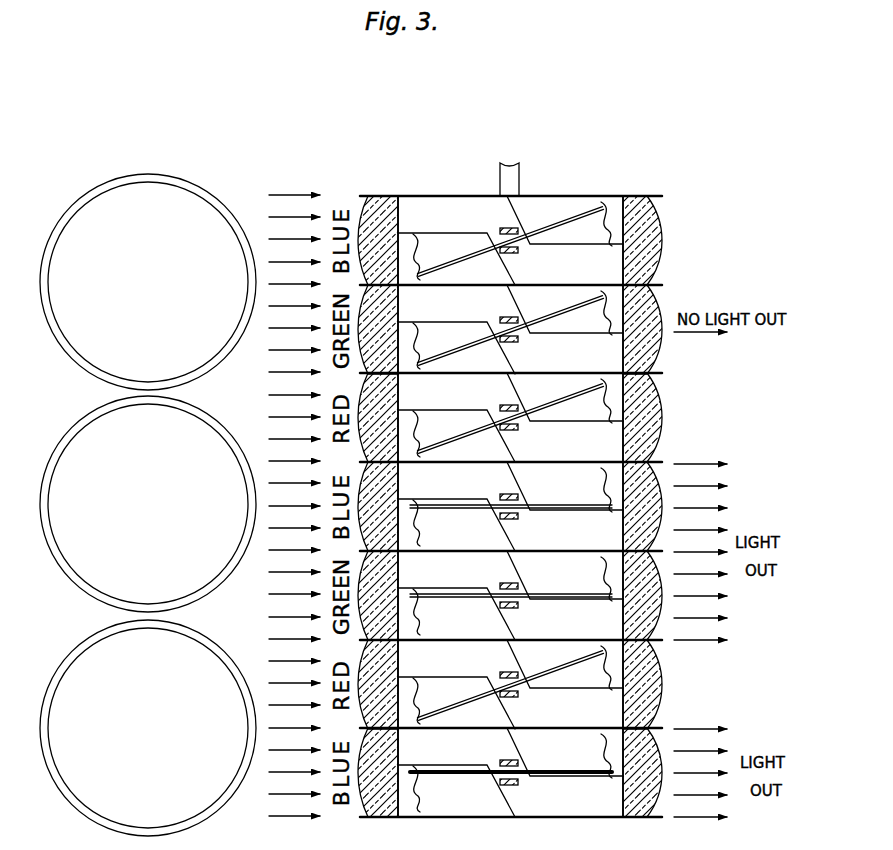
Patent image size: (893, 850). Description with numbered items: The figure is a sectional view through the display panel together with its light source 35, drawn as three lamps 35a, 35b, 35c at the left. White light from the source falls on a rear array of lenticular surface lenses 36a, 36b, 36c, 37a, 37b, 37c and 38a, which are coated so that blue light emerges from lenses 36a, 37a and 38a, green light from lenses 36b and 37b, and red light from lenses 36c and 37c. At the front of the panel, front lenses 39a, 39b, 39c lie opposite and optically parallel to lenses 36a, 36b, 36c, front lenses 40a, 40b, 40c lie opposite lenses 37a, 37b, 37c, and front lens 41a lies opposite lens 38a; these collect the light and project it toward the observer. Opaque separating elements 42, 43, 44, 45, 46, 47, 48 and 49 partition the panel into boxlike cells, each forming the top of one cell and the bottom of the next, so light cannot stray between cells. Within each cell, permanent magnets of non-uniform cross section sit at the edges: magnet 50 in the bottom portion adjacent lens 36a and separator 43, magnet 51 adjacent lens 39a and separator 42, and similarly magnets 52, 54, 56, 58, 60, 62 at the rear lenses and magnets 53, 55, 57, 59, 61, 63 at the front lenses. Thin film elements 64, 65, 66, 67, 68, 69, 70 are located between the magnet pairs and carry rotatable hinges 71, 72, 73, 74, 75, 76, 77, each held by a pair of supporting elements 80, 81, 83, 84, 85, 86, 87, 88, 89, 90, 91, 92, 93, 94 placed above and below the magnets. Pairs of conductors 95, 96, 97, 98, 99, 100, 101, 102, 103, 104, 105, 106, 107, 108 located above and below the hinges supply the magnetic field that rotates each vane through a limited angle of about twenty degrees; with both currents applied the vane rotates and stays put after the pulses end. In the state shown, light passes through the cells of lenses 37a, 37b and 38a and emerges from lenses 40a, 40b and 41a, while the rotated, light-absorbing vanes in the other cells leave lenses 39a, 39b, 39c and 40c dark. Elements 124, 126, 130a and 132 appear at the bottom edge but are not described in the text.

The light source 35 is at (150, 137).
The light source 35a is at (190, 188).
The light source 35b is at (190, 411).
The light source 35c is at (190, 634).
The lenticular surface lens 36a is at (378, 205).
The lenticular surface lens 36b is at (376, 307).
The lenticular surface lens 36c is at (376, 395).
The lenticular surface lens 37a is at (376, 484).
The lenticular surface lens 37b is at (376, 573).
The lenticular surface lens 37c is at (376, 662).
The lenticular surface lens 38a is at (376, 751).
The lenticular surface lens 39a is at (657, 224).
The lenticular surface lens 39b is at (656, 305).
The lenticular surface lens 39c is at (656, 400).
The lenticular surface lens 40a is at (656, 485).
The lenticular surface lens 40b is at (656, 570).
The lenticular surface lens 40c is at (660, 655).
The lenticular surface lens 41a is at (660, 752).
The opaque separating element 42 is at (556, 197).
The opaque separating element 43 is at (545, 285).
The opaque separating element 44 is at (545, 373).
The opaque separating element 45 is at (545, 462).
The opaque separating element 46 is at (545, 551).
The opaque separating element 47 is at (545, 640).
The opaque separating element 48 is at (545, 728).
The opaque separating element 49 is at (545, 817).
The permanent magnet 50 is at (419, 248).
The permanent magnet 51 is at (600, 236).
The permanent magnet 52 is at (419, 335).
The permanent magnet 53 is at (604, 316).
The permanent magnet 54 is at (419, 425).
The permanent magnet 55 is at (604, 408).
The permanent magnet 56 is at (419, 515).
The permanent magnet 57 is at (600, 490).
The permanent magnet 58 is at (419, 608).
The permanent magnet 59 is at (598, 580).
The permanent magnet 60 is at (419, 691).
The permanent magnet 61 is at (600, 673).
The permanent magnet 62 is at (419, 786).
The permanent magnet 63 is at (598, 752).
The thin film element 64 is at (565, 226).
The thin film element 65 is at (585, 312).
The thin film element 66 is at (585, 400).
The thin film element 67 is at (560, 506).
The thin film element 68 is at (487, 599).
The thin film element 69 is at (451, 704).
The thin film element 70 is at (460, 775).
The hinge 71 is at (503, 229).
The hinge 72 is at (503, 318).
The hinge 73 is at (503, 406).
The hinge 74 is at (503, 495).
The hinge 75 is at (522, 582).
The hinge 76 is at (522, 672).
The hinge 77 is at (522, 762).
The supporting element 80 is at (420, 206).
The supporting element 81 is at (503, 275).
The supporting element 83 is at (529, 300).
The supporting element 84 is at (503, 361).
The supporting element 85 is at (529, 388).
The supporting element 86 is at (503, 449).
The supporting element 87 is at (532, 477).
The supporting element 88 is at (503, 540).
The supporting element 89 is at (459, 580).
The supporting element 90 is at (514, 635).
The supporting element 91 is at (459, 670).
The supporting element 92 is at (515, 716).
The supporting element 93 is at (459, 760).
The supporting element 94 is at (514, 806).
The conductor 95 is at (498, 228).
The conductor 96 is at (519, 255).
The conductor 97 is at (498, 317).
The conductor 98 is at (519, 344).
The conductor 99 is at (498, 405).
The conductor 100 is at (519, 432).
The conductor 101 is at (498, 494).
The conductor 102 is at (519, 521).
The conductor 103 is at (505, 583).
The conductor 104 is at (519, 608).
The conductor 105 is at (505, 672).
The conductor 106 is at (519, 697).
The conductor 107 is at (505, 762).
The conductor 108 is at (519, 786).
The conductor 124 is at (545, 845).
The conductor 126 is at (718, 845).
The conductor 130a is at (484, 845).
The conductor 132 is at (248, 845).